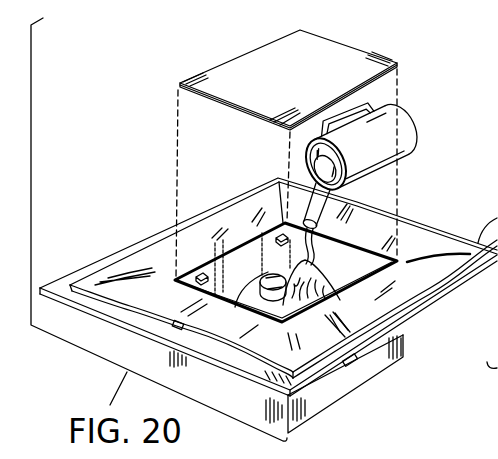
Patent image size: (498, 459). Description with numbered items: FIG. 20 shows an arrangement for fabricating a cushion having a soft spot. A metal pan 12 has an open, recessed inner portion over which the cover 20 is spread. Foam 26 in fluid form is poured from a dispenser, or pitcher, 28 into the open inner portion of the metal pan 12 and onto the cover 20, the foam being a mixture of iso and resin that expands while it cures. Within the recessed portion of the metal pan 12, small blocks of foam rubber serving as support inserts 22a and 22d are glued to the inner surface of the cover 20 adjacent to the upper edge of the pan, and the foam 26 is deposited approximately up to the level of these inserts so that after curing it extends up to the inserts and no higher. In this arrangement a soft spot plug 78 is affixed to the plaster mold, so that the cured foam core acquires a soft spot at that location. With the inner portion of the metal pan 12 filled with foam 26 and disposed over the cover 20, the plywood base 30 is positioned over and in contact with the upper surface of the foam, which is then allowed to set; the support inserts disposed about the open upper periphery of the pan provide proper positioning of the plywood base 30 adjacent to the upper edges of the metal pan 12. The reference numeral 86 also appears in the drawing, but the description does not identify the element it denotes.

The metal pan 12 is at (347, 374).
The cover 20 is at (410, 242).
The support insert 22a is at (279, 178).
The support insert 22d is at (198, 273).
The foam 26 is at (431, 312).
The dispenser 28 is at (406, 120).
The plywood base 30 is at (300, 84).
The soft spot plug 78 is at (229, 262).
The fastener 86 is at (487, 353).